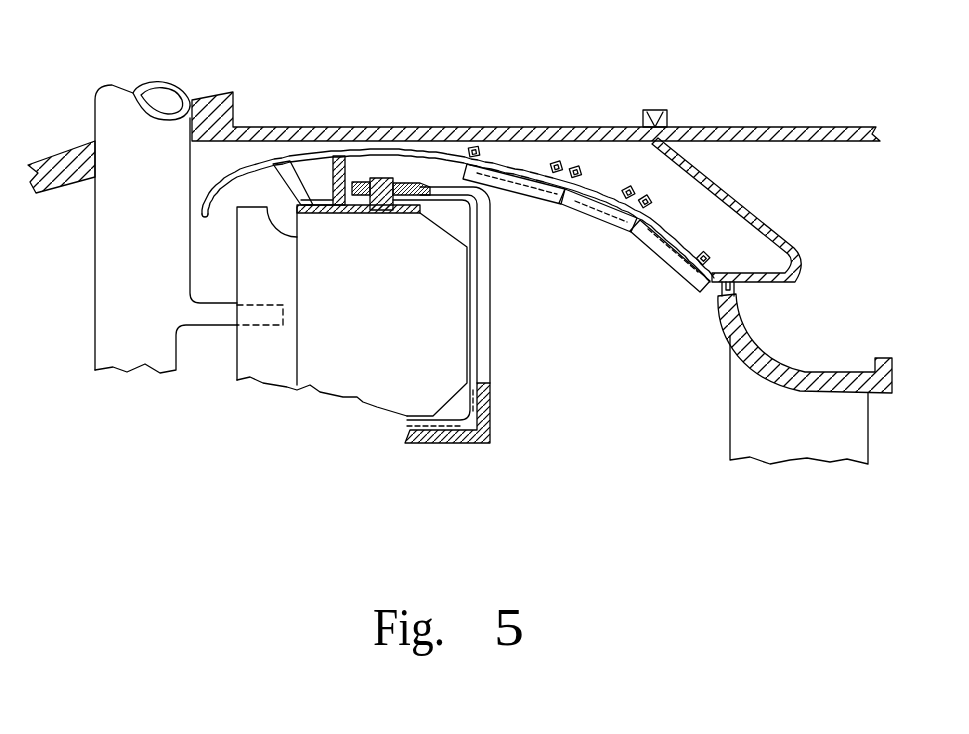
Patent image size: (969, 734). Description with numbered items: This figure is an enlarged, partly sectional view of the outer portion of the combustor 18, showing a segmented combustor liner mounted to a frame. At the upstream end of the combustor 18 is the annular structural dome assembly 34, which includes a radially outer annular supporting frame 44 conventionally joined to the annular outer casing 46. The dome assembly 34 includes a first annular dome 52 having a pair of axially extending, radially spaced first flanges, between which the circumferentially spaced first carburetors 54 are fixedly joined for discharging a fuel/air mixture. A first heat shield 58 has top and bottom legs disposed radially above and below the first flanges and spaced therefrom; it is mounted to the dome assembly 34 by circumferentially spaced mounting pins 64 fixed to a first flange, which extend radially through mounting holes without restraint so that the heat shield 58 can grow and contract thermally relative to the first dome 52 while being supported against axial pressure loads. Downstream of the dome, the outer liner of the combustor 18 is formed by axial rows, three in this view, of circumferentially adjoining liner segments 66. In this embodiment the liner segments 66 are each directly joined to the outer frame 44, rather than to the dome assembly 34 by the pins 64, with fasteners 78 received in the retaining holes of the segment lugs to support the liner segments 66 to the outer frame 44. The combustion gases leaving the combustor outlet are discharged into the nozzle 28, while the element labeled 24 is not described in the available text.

The combustor 18 is at (747, 95).
The support post 24 is at (95, 272).
The nozzle 28 is at (770, 348).
The structural dome assembly 34 is at (287, 162).
The outer frame 44 is at (513, 163).
The outer casing 46 is at (583, 127).
The first dome 52 is at (342, 211).
The first carburetors 54 is at (357, 335).
The first heat shield 58 is at (483, 432).
The mounting pins 64 is at (382, 182).
The liner segments 66 is at (523, 193).
The fastener 78 is at (583, 174).